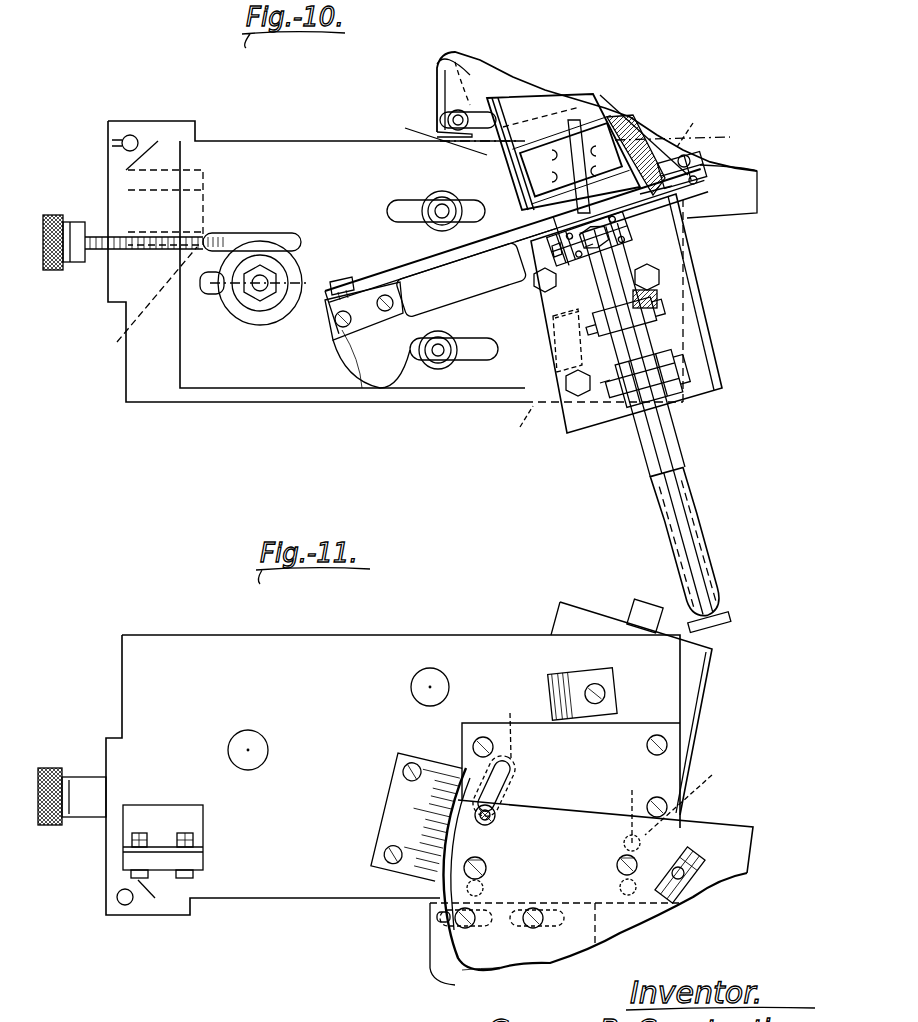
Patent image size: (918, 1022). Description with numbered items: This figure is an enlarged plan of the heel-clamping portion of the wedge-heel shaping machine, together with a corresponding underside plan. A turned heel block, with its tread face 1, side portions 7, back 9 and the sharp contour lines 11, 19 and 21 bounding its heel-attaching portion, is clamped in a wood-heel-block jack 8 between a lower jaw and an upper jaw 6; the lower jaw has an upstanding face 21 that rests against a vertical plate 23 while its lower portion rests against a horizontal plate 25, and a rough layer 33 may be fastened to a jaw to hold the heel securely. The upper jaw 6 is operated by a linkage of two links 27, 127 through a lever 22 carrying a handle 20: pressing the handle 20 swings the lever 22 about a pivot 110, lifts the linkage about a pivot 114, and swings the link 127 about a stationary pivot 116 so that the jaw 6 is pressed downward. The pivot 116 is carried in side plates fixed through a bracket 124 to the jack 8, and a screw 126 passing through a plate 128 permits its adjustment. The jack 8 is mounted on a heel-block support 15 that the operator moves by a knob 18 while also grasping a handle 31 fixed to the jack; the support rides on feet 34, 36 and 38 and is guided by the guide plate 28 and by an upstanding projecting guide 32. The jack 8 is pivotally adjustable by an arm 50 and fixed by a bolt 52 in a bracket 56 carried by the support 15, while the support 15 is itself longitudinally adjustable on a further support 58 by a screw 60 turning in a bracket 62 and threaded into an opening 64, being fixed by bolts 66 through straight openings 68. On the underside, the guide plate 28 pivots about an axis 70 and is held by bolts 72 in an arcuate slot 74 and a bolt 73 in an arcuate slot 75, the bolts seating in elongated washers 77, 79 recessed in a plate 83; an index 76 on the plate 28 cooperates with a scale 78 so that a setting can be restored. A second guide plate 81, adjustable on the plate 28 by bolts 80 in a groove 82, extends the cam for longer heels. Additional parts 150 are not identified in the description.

In FIG. 10, the tread face 1 is at (650, 215).
In FIG. 10, the upper jaw 6 is at (615, 118).
In FIG. 10, the side portions 7 is at (560, 128).
In FIG. 10, the wood-heel-block jack 8 is at (538, 178).
In FIG. 11, the wood-heel-block jack 8 is at (710, 707).
In FIG. 10, the back 9 is at (516, 135).
In FIG. 10, the sharp line 11 is at (503, 97).
In FIG. 10, the heel-block support 15 is at (278, 155).
In FIG. 10, the knob 18 is at (260, 310).
In FIG. 10, the sharp line 19 is at (600, 118).
In FIG. 10, the handle 20 is at (695, 548).
In FIG. 10, the upstanding face 21 is at (430, 136).
In FIG. 10, the lever 22 is at (655, 435).
In FIG. 10, the vertical plate 23 is at (485, 250).
In FIG. 10, the horizontal plate 25 is at (628, 180).
In FIG. 10, the link 27 is at (640, 260).
In FIG. 10, the guide plate 28 is at (447, 55).
In FIG. 11, the guide plate 28 is at (618, 918).
In FIG. 11, the handle 31 is at (631, 606).
In FIG. 10, the projecting guide 32 is at (131, 136).
In FIG. 11, the projecting guide 32 is at (118, 903).
In FIG. 10, the rough layer 33 is at (497, 200).
In FIG. 10, the foot 34 is at (689, 146).
In FIG. 11, the foot 34 is at (688, 855).
In FIG. 10, the foot 36 is at (517, 426).
In FIG. 11, the foot 36 is at (548, 688).
In FIG. 10, the foot 38 is at (192, 177).
In FIG. 11, the foot 38 is at (178, 852).
In FIG. 10, the arm 50 is at (410, 268).
In FIG. 10, the bolt 52 is at (348, 280).
In FIG. 10, the bracket 56 is at (377, 287).
In FIG. 10, the support 58 is at (150, 393).
In FIG. 11, the support 58 is at (213, 645).
In FIG. 10, the screw 60 is at (100, 245).
In FIG. 10, the bracket 62 is at (78, 222).
In FIG. 11, the bracket 62 is at (72, 777).
In FIG. 10, the threaded opening 64 is at (141, 304).
In FIG. 10, the bolts 66 is at (440, 200).
In FIG. 10, the openings 68 is at (400, 200).
In FIG. 10, the axis 70 is at (703, 160).
In FIG. 11, the axis 70 is at (690, 878).
In FIG. 11, the bolts 72 is at (488, 858).
In FIG. 11, the bolt 73 is at (617, 857).
In FIG. 11, the arcuate slot 74 is at (513, 767).
In FIG. 11, the arcuate slot 75 is at (652, 760).
In FIG. 11, the index 76 is at (475, 859).
In FIG. 11, the elongated washer 77 is at (571, 748).
In FIG. 11, the scale 78 is at (402, 796).
In FIG. 11, the elongated washer 79 is at (598, 862).
In FIG. 10, the bolts 80 is at (452, 113).
In FIG. 11, the bolts 80 is at (535, 927).
In FIG. 10, the second guide plate 81 is at (437, 70).
In FIG. 11, the second guide plate 81 is at (428, 972).
In FIG. 10, the groove 82 is at (440, 118).
In FIG. 11, the groove 82 is at (438, 916).
In FIG. 11, the plate 83 is at (630, 733).
In FIG. 10, the pivot 110 is at (603, 387).
In FIG. 10, the pivot 114 is at (583, 320).
In FIG. 10, the pivot 116 is at (612, 232).
In FIG. 10, the bracket 124 is at (655, 335).
In FIG. 10, the screw 126 is at (556, 246).
In FIG. 10, the link 127 is at (630, 318).
In FIG. 10, the plate 128 is at (588, 250).
In FIG. 10, the hex nut 150 is at (658, 277).